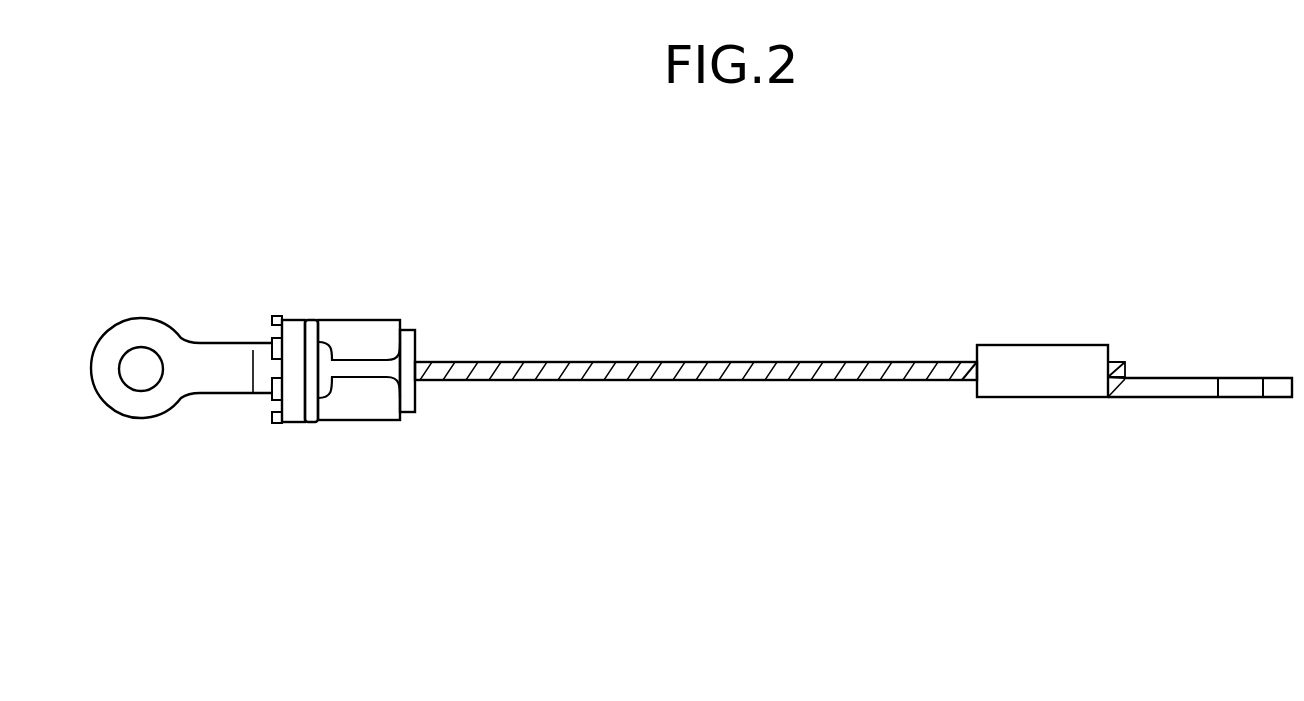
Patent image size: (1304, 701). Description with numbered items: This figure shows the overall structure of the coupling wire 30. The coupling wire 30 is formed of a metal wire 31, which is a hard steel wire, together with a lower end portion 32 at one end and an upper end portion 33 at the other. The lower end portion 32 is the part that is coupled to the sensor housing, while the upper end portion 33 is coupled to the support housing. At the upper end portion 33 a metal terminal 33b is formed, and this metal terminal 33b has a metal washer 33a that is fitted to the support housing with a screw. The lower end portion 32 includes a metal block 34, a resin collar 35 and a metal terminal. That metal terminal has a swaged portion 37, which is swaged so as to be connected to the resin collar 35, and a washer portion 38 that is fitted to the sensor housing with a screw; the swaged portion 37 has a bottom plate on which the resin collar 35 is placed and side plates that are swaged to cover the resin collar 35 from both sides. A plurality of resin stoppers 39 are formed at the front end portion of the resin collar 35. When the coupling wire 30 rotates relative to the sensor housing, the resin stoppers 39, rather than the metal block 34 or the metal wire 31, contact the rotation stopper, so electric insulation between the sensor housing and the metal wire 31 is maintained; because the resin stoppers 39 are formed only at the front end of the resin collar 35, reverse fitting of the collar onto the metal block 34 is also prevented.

The coupling wire 30 is at (545, 168).
The metal wire 31 is at (615, 360).
The lower end portion 32 is at (233, 249).
The upper end portion 33 is at (1088, 253).
The metal washer 33a is at (1203, 378).
The metal terminal 33b is at (1067, 397).
The metal block 34 is at (293, 405).
The resin collar 35 is at (407, 328).
The swaged portion 37 is at (368, 422).
The washer portion 38 is at (142, 318).
The resin stoppers 39 is at (272, 318).